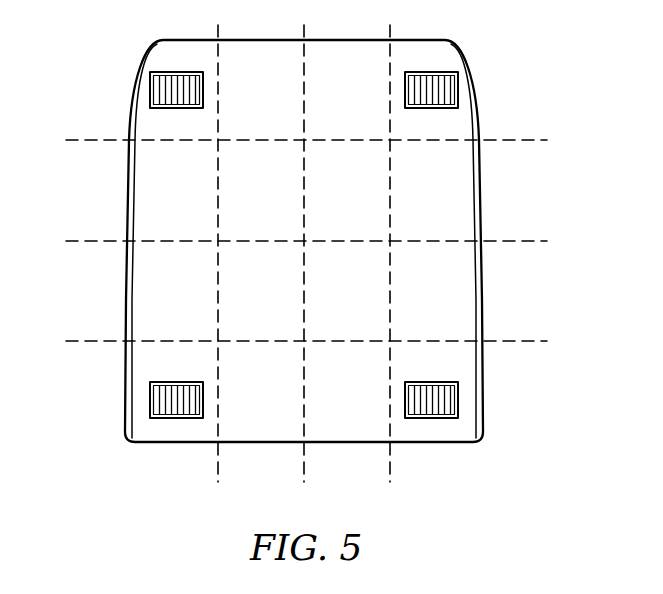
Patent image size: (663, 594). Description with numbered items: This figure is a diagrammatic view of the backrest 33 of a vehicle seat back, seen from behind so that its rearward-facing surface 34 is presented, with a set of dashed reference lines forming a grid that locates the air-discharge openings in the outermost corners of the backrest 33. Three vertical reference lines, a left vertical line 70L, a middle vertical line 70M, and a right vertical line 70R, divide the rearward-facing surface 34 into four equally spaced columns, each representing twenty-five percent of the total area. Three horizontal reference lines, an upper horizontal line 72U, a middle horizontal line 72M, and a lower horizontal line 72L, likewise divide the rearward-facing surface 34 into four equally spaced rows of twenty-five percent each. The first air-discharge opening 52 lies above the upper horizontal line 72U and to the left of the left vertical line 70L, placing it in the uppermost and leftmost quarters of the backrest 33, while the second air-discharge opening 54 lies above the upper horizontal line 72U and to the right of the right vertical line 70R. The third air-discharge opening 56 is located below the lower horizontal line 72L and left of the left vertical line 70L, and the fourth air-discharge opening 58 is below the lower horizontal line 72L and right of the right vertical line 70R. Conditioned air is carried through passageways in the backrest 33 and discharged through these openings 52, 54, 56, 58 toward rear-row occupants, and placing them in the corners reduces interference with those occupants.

The backrest 33 is at (472, 81).
The rearward-facing surface 34 is at (456, 184).
The first air-discharge opening 52 is at (167, 72).
The second air-discharge opening 54 is at (432, 72).
The third air-discharge opening 56 is at (163, 418).
The fourth air-discharge opening 58 is at (432, 418).
The upper horizontal line 72U is at (83, 140).
The middle horizontal line 72M is at (83, 241).
The lower horizontal line 72L is at (83, 341).
The left vertical line 70L is at (218, 463).
The middle vertical line 70M is at (304, 463).
The right vertical line 70R is at (390, 463).